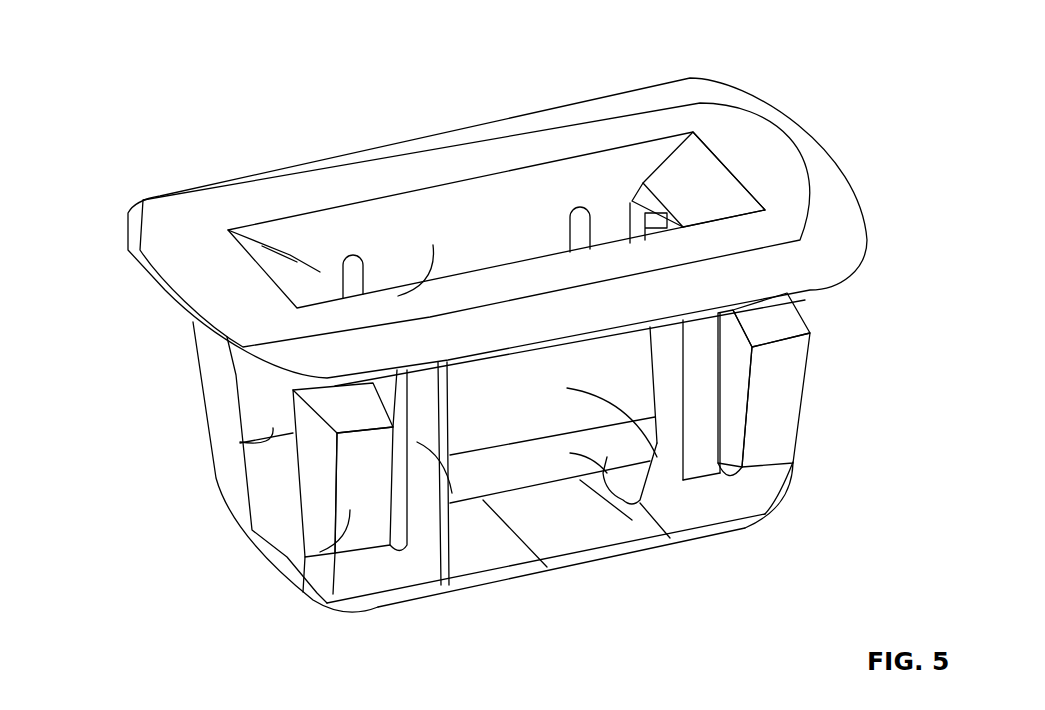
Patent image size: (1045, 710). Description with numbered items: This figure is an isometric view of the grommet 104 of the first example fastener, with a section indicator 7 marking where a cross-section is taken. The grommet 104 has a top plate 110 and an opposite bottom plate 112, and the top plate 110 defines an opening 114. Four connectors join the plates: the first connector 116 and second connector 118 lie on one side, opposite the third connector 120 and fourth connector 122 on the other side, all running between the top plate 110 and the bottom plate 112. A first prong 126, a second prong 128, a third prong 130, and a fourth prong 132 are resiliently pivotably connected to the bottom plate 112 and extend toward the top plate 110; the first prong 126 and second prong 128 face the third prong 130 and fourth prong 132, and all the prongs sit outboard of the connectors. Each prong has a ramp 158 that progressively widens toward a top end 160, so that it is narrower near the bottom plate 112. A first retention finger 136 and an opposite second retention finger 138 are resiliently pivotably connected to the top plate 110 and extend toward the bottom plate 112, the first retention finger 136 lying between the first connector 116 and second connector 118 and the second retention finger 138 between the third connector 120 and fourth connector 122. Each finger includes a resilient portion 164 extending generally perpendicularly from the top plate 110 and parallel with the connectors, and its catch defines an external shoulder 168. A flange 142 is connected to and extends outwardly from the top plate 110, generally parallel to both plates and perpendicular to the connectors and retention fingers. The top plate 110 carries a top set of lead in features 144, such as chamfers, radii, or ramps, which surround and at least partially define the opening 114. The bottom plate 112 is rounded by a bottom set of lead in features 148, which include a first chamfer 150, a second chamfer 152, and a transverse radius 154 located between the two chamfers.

The grommet 104 is at (118, 62).
The top plate 110 is at (770, 220).
The bottom plate 112 is at (777, 485).
The opening 114 is at (478, 222).
The first connector 116 is at (440, 592).
The second connector 118 is at (703, 378).
The third connector 120 is at (248, 236).
The fourth connector 122 is at (617, 222).
The first prong 126 is at (363, 470).
The second prong 128 is at (790, 383).
The third prong 130 is at (280, 448).
The fourth prong 132 is at (643, 200).
The first retention finger 136 is at (657, 447).
The second retention finger 138 is at (382, 263).
The flange 142 is at (787, 262).
The top set of lead in features 144 is at (705, 180).
The bottom set of lead in features 148 is at (573, 578).
The first chamfer 150 is at (327, 607).
The second chamfer 152 is at (697, 503).
The transverse radius 154 is at (677, 540).
The ramp 158 is at (290, 557).
The top end 160 is at (293, 390).
The resilient portion 164 is at (477, 400).
The external shoulder 168 is at (630, 504).
The section line 7- 7 is at (377, 93).